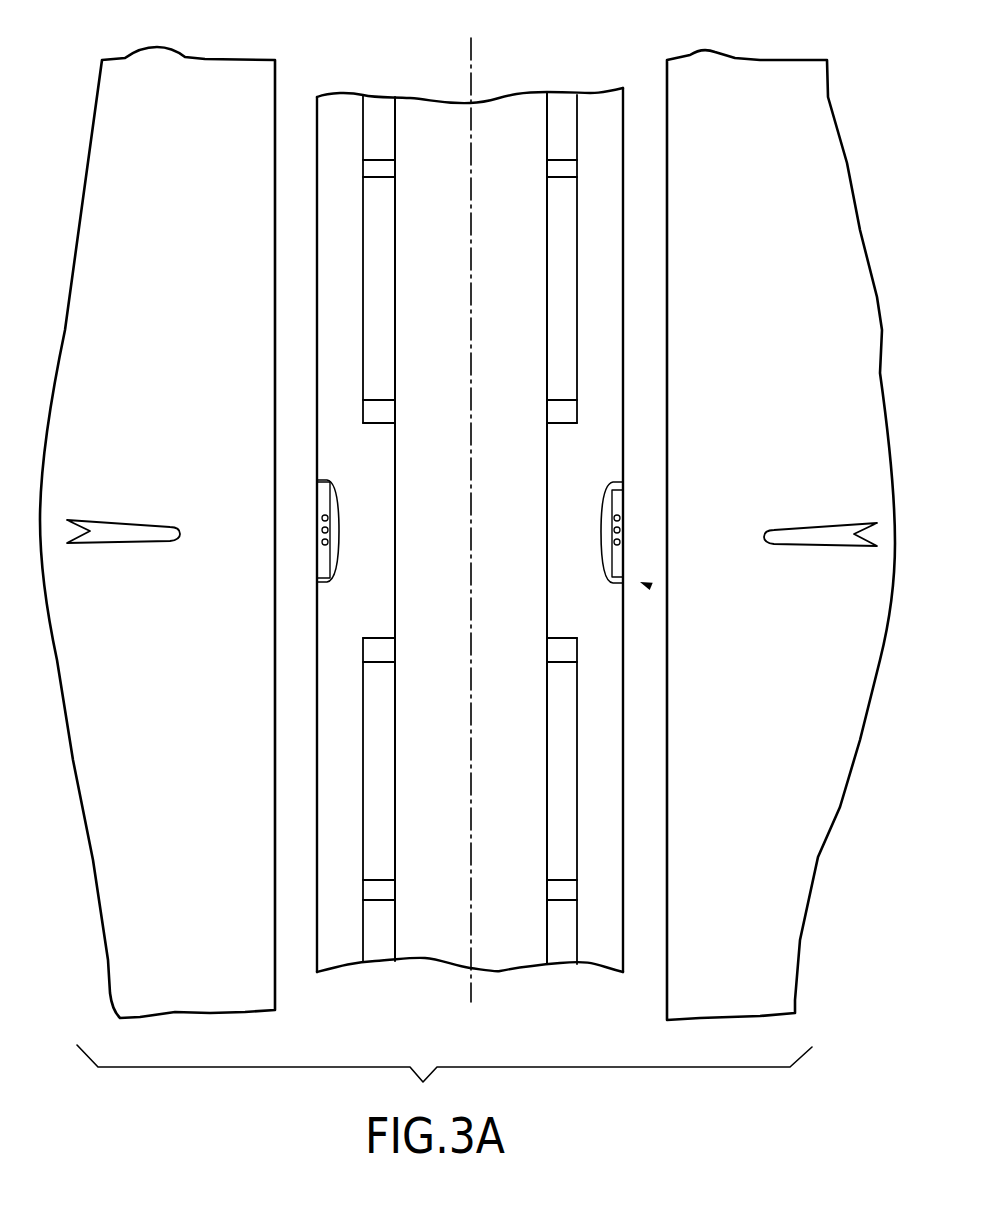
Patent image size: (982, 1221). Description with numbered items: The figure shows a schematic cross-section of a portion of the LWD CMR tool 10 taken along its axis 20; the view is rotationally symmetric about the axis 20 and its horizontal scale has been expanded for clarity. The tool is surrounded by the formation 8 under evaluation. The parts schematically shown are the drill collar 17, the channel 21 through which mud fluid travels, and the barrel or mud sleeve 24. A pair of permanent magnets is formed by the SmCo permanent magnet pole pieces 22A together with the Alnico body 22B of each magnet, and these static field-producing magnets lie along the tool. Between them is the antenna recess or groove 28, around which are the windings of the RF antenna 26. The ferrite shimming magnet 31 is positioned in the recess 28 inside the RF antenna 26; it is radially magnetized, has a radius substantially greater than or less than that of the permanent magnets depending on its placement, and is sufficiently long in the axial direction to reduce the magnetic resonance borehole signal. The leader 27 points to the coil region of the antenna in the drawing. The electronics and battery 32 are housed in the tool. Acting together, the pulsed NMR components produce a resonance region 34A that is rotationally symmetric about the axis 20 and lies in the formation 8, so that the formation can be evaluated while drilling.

The formation 8 is at (823, 426).
The LWD CMR tool 10 is at (730, 298).
The drill collar 17 is at (354, 227).
The axis 20 is at (471, 62).
The channel 21 is at (436, 227).
The SmCo permanent magnet pole pieces 22A is at (580, 168).
The Alnico body 22B is at (580, 235).
The barrel or mud sleeve 24 is at (445, 102).
The RF antenna 26 is at (620, 540).
The detector coil 27 is at (318, 565).
The antenna recess or groove 28 is at (645, 584).
The ferrite shimming magnet 31 is at (615, 563).
The electronics and battery 32 is at (375, 102).
The resonance region 34A is at (130, 522).